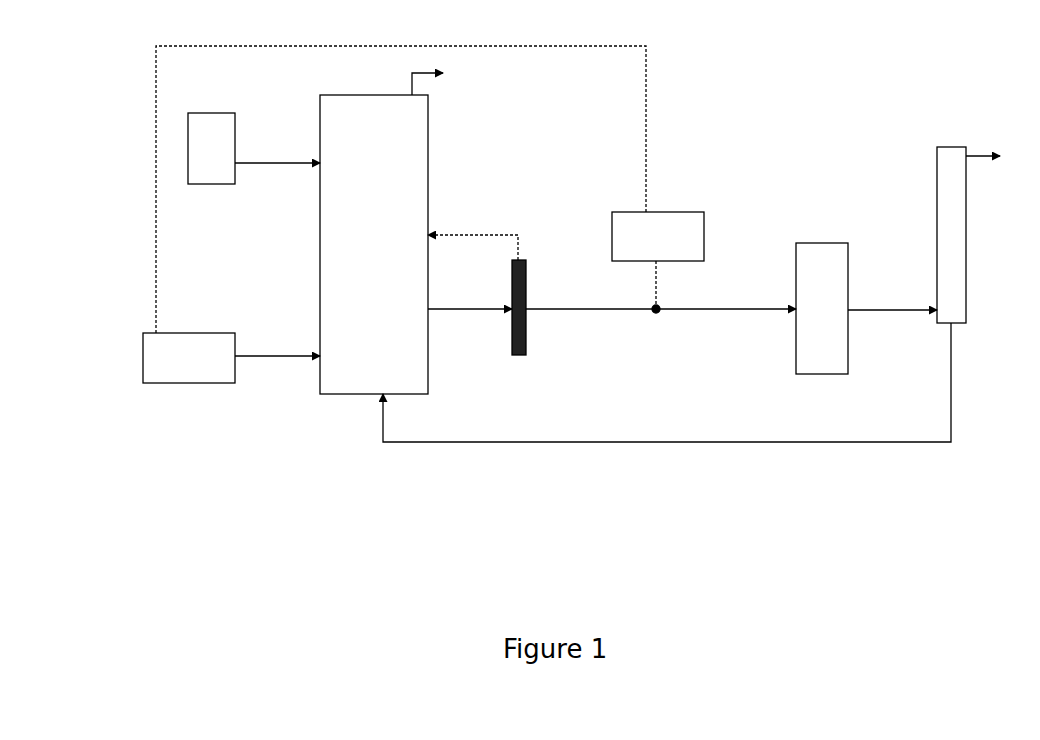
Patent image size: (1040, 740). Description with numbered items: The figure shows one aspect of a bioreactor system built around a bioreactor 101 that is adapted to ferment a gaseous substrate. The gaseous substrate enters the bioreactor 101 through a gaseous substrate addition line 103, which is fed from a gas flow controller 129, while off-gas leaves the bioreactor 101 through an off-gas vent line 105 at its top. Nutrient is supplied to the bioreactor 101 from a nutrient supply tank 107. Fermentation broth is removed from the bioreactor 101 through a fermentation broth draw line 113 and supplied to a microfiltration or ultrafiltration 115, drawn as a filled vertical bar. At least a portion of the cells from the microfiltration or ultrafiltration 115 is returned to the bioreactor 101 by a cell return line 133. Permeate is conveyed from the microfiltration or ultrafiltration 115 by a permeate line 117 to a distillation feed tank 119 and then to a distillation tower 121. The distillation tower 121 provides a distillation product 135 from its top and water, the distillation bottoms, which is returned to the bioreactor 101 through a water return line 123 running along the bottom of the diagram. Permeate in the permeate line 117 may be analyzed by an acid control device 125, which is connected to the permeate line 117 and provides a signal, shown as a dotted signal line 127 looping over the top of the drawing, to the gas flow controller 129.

The bioreactor 101 is at (374, 244).
The gaseous substrate addition line 103 is at (277, 366).
The off-gas vent line 105 is at (443, 79).
The nutrient supply tank 107 is at (254, 148).
The fermentation broth draw line 113 is at (470, 320).
The microfiltration or ultrafiltration 115 is at (518, 318).
The permeate line 117 is at (661, 318).
The distillation feed tank 119 is at (866, 308).
The distillation tower 121 is at (970, 235).
The water return line 123 is at (667, 395).
The acid control device 125 is at (658, 258).
The signal line 127 is at (401, 179).
The gas flow controller 129 is at (189, 358).
The cell return line 133 is at (473, 239).
The distillation product 135 is at (999, 157).